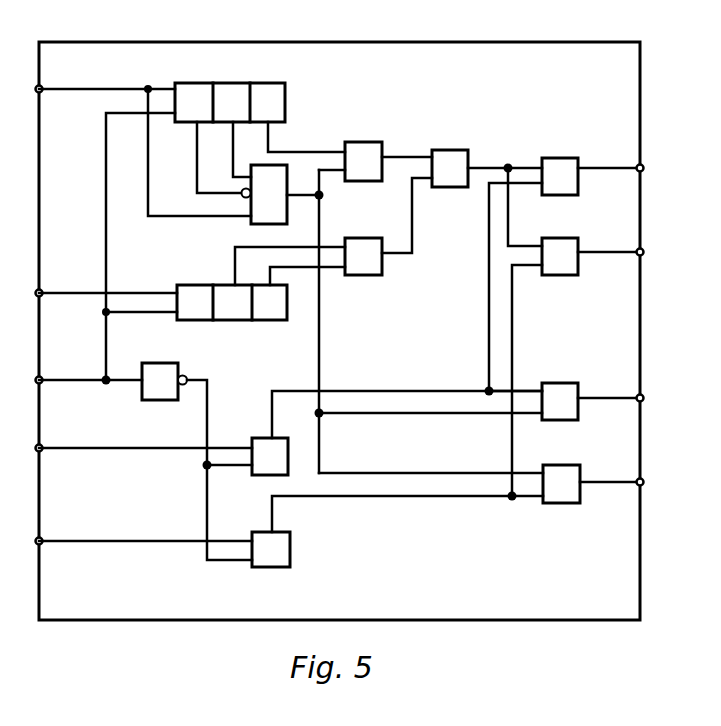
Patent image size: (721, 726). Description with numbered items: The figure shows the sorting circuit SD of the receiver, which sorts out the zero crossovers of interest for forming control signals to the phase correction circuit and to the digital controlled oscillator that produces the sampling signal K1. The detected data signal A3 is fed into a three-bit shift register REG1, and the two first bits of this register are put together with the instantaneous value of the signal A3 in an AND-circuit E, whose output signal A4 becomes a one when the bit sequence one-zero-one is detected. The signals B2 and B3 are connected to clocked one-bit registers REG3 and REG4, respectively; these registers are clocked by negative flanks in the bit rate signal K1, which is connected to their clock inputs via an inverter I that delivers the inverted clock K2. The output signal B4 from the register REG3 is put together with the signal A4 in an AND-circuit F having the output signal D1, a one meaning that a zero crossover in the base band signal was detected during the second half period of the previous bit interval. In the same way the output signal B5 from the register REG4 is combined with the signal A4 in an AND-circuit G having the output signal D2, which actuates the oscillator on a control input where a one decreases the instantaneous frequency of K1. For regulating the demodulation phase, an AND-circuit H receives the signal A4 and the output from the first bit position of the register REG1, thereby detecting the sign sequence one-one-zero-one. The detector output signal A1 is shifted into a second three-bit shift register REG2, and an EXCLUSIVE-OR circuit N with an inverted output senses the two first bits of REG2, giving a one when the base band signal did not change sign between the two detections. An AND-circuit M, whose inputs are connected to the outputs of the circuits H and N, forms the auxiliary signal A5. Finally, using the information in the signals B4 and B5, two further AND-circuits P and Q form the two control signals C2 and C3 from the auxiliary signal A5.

The sorting circuit SD is at (346, 41).
The detected data signal A3 is at (45, 88).
The three-bit shift register REG1 is at (226, 78).
The AND-circuit E is at (288, 166).
The output signal A4 is at (321, 200).
The AND-circuit H is at (365, 142).
The EXCLUSIVE-OR circuit N is at (383, 277).
The AND-circuit M is at (448, 150).
The auxiliary signal A5 is at (492, 167).
The AND-circuit P is at (558, 158).
The control signal C2 is at (607, 165).
The AND-circuit Q is at (556, 238).
The control signal C3 is at (606, 252).
The AND-circuit F is at (559, 383).
The output signal D1 is at (607, 395).
The AND-circuit G is at (558, 465).
The output signal D2 is at (607, 479).
The detector output signal A1 is at (53, 293).
The three-bit shift register REG2 is at (261, 298).
The bit rate signal K1 is at (48, 380).
The inverter I is at (153, 363).
The inverted bit rate signal K2 is at (221, 380).
The zero crossover signal B2 is at (49, 448).
The clocked one-bit register REG3 is at (250, 477).
The output signal B4 is at (285, 392).
The zero crossover signal B3 is at (49, 541).
The clocked one-bit register REG4 is at (270, 569).
The output signal B5 is at (285, 498).